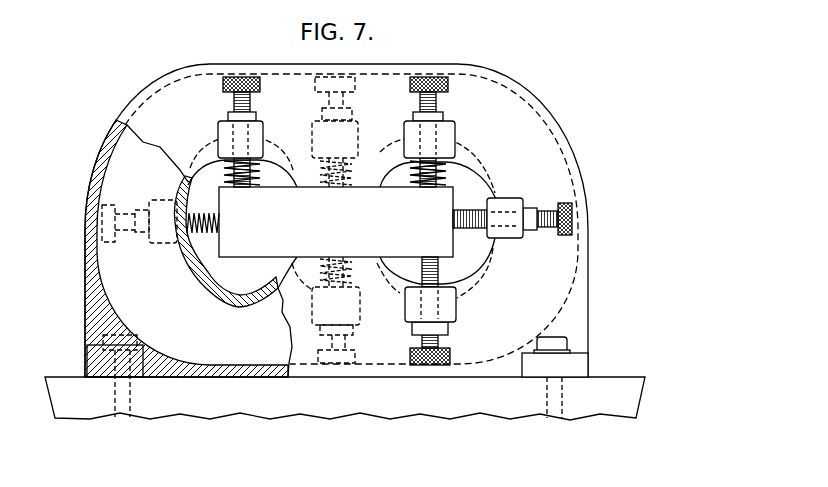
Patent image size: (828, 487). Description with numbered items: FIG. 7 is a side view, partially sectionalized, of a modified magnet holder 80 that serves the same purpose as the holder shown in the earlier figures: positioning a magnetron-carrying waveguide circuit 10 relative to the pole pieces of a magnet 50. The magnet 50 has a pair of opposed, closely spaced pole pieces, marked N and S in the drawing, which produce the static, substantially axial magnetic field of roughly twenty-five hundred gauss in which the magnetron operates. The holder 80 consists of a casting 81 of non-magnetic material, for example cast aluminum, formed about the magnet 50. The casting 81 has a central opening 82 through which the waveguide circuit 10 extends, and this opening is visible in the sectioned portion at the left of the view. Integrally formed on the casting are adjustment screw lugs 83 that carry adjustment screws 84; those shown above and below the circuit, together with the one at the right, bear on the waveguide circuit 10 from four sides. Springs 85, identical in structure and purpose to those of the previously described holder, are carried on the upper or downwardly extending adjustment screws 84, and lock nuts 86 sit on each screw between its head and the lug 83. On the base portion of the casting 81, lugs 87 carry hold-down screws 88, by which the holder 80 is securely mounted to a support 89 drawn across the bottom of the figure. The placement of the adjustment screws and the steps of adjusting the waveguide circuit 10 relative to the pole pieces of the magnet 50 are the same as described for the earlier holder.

The waveguide circuit 10 is at (346, 231).
The magnet 50 is at (210, 330).
The magnet holder 80 is at (530, 81).
The casting 81 is at (87, 290).
The central opening 82 is at (187, 258).
The adjustment screw lugs 83 is at (218, 139).
The adjustment screws 84 is at (229, 101).
The springs 85 is at (227, 174).
The lock nuts 86 is at (228, 117).
The lugs 87 is at (88, 358).
The hold-down screws 88 is at (90, 340).
The support 89 is at (368, 412).